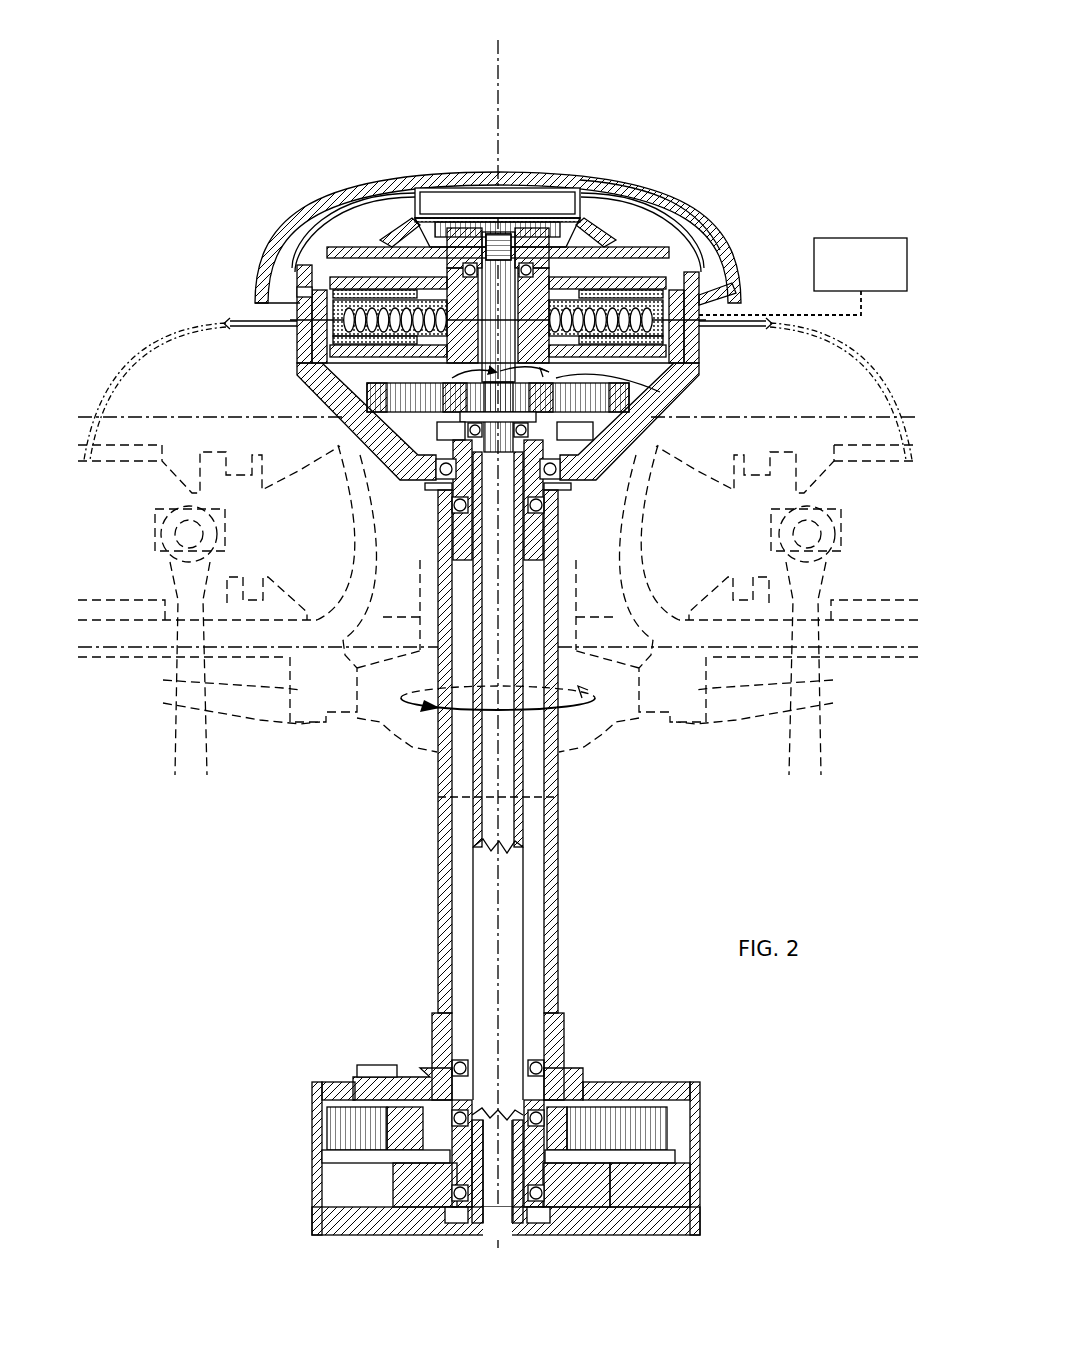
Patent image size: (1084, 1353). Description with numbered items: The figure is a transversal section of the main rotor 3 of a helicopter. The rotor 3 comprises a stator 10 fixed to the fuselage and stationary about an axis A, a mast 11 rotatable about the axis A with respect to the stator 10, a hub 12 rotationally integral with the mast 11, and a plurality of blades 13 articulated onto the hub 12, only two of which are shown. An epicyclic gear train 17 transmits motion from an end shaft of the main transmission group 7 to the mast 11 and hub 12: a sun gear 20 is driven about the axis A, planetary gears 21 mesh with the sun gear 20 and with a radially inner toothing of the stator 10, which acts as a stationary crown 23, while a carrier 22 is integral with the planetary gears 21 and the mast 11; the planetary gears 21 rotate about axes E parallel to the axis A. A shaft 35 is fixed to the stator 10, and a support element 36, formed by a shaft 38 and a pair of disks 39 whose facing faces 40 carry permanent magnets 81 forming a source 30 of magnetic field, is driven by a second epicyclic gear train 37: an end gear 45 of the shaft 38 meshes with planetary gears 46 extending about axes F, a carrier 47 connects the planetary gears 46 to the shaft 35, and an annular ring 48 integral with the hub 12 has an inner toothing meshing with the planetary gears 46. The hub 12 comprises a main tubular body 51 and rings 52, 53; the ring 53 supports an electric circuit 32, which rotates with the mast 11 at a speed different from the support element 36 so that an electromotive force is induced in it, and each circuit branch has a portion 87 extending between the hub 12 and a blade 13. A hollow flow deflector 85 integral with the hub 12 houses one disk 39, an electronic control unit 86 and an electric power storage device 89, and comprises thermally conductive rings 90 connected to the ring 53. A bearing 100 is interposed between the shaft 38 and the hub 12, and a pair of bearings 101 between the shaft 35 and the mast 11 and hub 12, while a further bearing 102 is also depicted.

The rotor 3 is at (655, 118).
The main transmission group 7 is at (692, 1157).
The stator 10 is at (578, 1212).
The mast 11 is at (553, 857).
The hub 12 is at (268, 352).
The blades 13 is at (105, 694).
The epicyclic gear train 17 is at (674, 1095).
The sun gear 20 is at (447, 1143).
The planetary gears 21 is at (358, 1128).
The carrier 22 is at (357, 1080).
The stationary crown 23 is at (672, 1128).
The source of magnetic field 30 is at (620, 254).
The electric circuit 32 is at (395, 318).
The shaft 35 is at (520, 824).
The support element 36 is at (562, 280).
The epicyclic gear train 37 is at (602, 432).
The shaft 38 is at (547, 262).
The disks 39 is at (430, 288).
The faces 40 is at (690, 312).
The end gear 45 is at (497, 400).
The planetary gears 46 is at (695, 430).
The carrier 47 is at (458, 478).
The annular ring 48 is at (372, 393).
The main tubular body 51 is at (318, 382).
The ring 52 is at (286, 226).
The ring 53 is at (426, 394).
The permanent magnets 81 is at (412, 287).
The flow deflector 85 is at (585, 175).
The electronic control unit 86 is at (458, 198).
The portion 87 is at (210, 336).
The electric power storage device 89 is at (870, 250).
The thermally conductive rings 90 is at (428, 232).
The bearing 100 is at (490, 290).
The bearings 101 is at (440, 470).
The bearing 102 is at (553, 471).
The axis A is at (500, 125).
The axes E is at (382, 1082).
The axes F is at (470, 448).